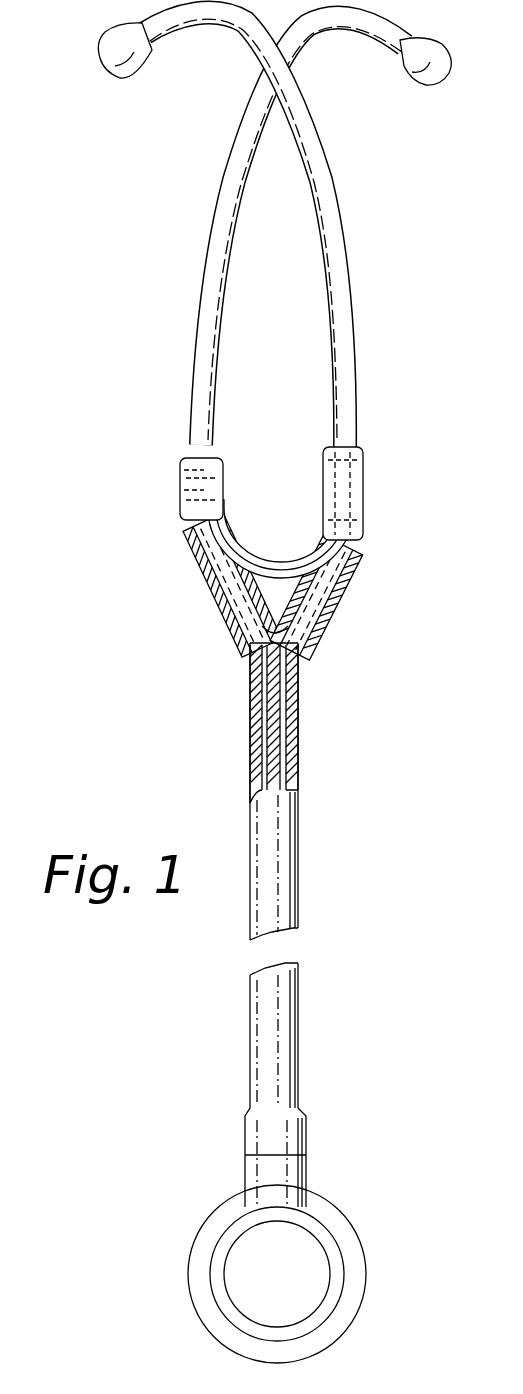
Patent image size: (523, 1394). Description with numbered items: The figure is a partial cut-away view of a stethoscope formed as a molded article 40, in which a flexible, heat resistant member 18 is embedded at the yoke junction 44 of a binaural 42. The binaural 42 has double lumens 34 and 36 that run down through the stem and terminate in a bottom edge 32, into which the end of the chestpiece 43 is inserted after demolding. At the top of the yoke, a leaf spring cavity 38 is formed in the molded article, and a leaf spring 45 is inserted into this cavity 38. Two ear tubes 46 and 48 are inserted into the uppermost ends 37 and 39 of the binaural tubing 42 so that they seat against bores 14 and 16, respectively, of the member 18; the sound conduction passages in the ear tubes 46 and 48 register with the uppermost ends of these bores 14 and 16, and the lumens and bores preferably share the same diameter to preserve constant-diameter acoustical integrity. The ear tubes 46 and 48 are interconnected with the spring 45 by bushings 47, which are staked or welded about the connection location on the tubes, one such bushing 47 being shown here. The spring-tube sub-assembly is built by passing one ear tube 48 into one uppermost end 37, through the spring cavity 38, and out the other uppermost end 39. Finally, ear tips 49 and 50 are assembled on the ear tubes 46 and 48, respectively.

The bore 14 is at (222, 614).
The bore 16 is at (343, 597).
The flexible, heat resistant member 18 is at (201, 585).
The bottom edge 32 is at (264, 1152).
The lumen 34 is at (266, 755).
The lumen 36 is at (268, 791).
The uppermost end 37 is at (190, 437).
The leaf spring cavity 38 is at (257, 556).
The uppermost end 39 is at (366, 440).
The molded article 40 is at (333, 1062).
The binaural 42 is at (298, 917).
The chestpiece 43 is at (366, 1245).
The yoke junction 44 is at (240, 625).
The leaf spring 45 is at (341, 565).
The ear tube 46 is at (198, 337).
The bushing 47 is at (188, 495).
The ear tube 48 is at (347, 351).
The ear tip 49 is at (119, 78).
The ear tip 50 is at (426, 85).